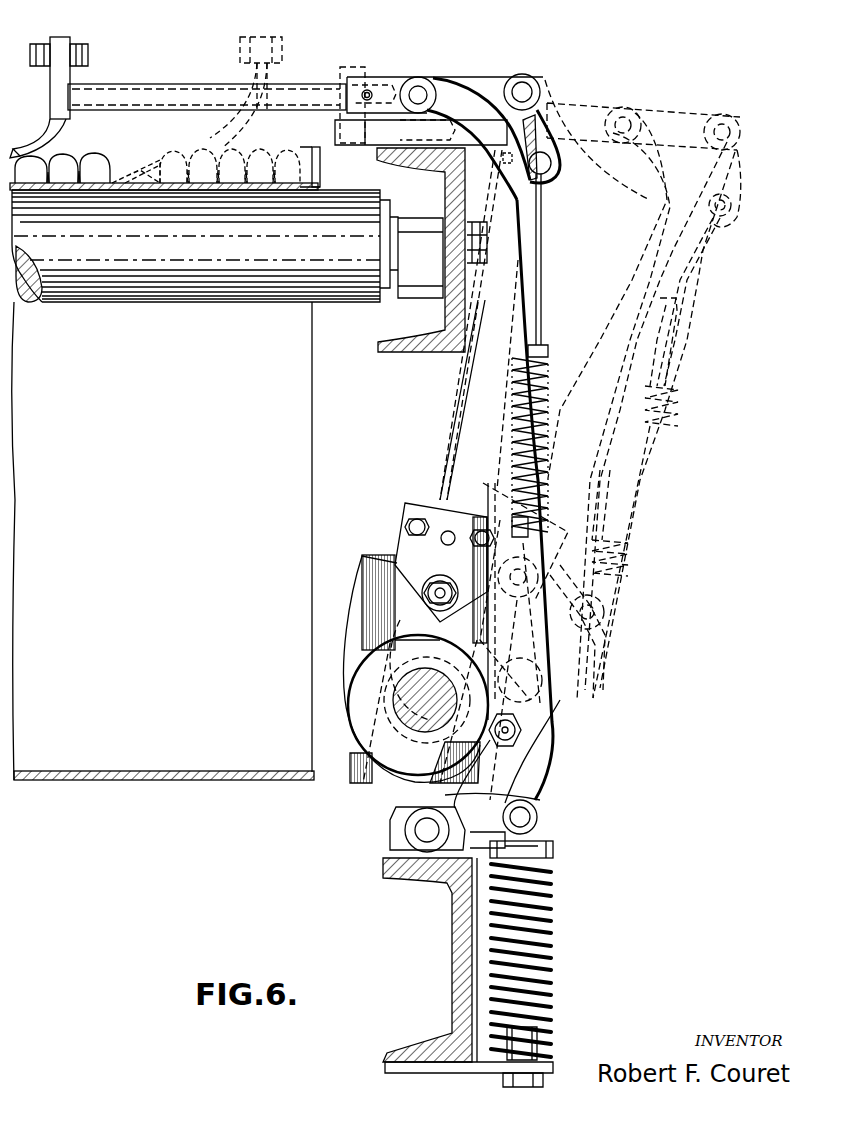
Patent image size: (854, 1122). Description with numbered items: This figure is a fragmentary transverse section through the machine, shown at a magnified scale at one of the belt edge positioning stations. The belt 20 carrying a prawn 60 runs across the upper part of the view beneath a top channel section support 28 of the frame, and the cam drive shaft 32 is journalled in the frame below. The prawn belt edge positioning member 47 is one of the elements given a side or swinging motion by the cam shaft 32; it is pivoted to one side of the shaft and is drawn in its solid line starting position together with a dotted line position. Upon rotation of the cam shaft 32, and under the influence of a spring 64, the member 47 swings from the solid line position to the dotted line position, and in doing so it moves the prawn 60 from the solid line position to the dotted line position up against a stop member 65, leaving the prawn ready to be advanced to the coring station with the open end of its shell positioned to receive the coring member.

The belt 20 is at (146, 190).
The top channel section support 28 is at (447, 343).
The cam drive shaft 32 is at (420, 633).
The prawn belt edge positioning member 47 is at (172, 97).
The prawn 60 is at (100, 168).
The spring 64 is at (546, 942).
The stop member 65 is at (320, 173).